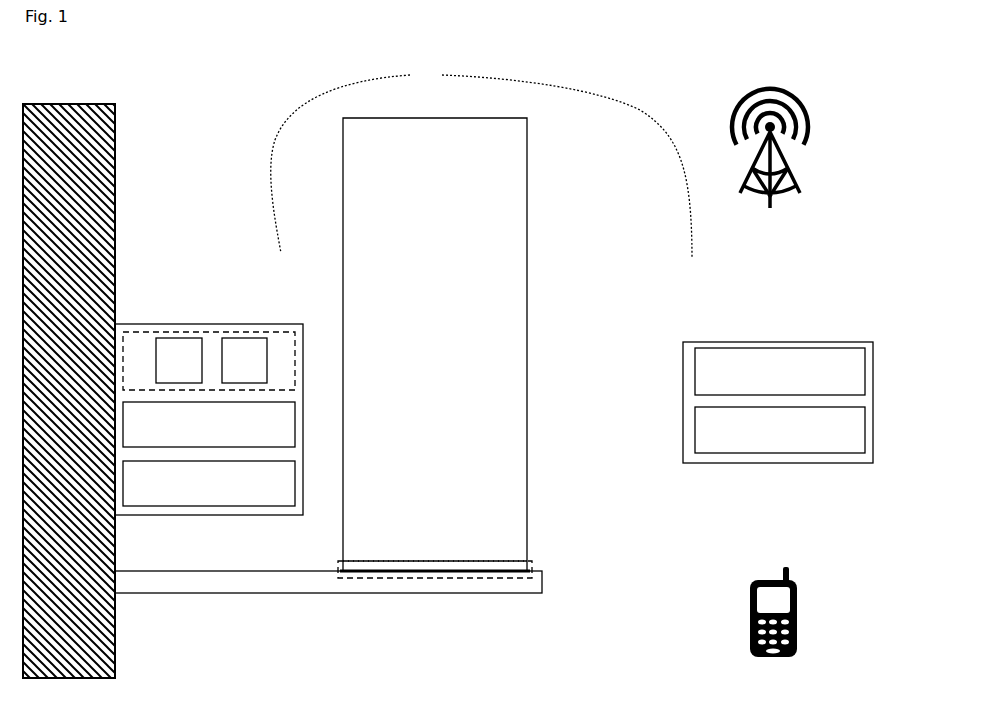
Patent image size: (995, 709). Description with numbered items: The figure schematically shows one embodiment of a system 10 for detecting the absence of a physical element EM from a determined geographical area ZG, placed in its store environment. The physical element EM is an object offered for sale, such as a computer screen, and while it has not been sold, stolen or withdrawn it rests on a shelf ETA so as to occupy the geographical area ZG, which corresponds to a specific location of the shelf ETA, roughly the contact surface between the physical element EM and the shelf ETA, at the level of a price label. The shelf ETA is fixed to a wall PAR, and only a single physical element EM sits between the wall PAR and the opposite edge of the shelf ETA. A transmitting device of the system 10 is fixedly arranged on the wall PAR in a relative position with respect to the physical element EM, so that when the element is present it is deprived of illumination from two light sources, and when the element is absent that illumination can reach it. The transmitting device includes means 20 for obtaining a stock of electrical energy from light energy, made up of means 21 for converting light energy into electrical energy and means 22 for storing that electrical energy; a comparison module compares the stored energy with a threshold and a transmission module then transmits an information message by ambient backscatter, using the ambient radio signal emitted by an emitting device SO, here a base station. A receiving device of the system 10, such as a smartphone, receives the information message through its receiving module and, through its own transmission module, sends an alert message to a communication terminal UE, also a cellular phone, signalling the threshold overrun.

The system 10 is at (481, 163).
The means for obtaining a stock of electrical energy from light energy 20 is at (155, 332).
The means for converting light energy into electrical energy 21 is at (179, 360).
The means for storing electrical energy 22 is at (244, 360).
The wall PAR is at (115, 152).
The physical element EM is at (447, 352).
The shelf ETA is at (197, 594).
The geographical area ZG is at (452, 579).
The emitting device SO is at (802, 187).
The communication terminal UE is at (799, 605).